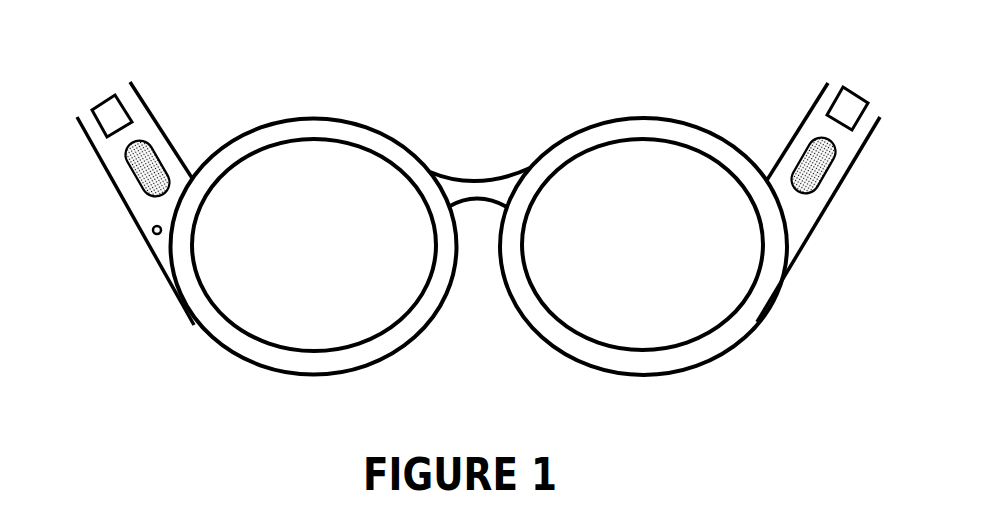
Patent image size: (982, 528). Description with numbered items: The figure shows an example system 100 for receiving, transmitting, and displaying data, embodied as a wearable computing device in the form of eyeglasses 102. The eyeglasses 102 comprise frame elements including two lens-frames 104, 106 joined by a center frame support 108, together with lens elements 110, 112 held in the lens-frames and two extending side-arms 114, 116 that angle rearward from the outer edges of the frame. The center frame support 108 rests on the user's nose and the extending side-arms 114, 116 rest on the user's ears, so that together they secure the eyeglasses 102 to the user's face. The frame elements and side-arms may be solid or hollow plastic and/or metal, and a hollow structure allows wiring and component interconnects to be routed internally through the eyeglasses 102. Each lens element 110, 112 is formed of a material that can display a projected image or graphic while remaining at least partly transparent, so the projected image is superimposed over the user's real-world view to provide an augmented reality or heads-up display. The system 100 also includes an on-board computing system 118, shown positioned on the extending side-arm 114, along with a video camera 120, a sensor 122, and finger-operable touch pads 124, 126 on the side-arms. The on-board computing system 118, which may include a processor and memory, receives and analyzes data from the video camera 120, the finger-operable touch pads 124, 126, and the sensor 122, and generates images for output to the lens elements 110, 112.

The system 100 is at (780, 342).
The eyeglasses 102 is at (479, 195).
The lens-frame 104 is at (278, 117).
The lens-frame 106 is at (620, 118).
The center frame support 108 is at (472, 180).
The lens element 110 is at (248, 307).
The lens element 112 is at (587, 323).
The extending side-arm 114 is at (136, 203).
The extending side-arm 116 is at (816, 202).
The on-board computing system 118 is at (115, 118).
The video camera 120 is at (152, 233).
The sensor 122 is at (850, 110).
The finger-operable touch pad 124 is at (143, 167).
The finger-operable touch pad 126 is at (813, 175).